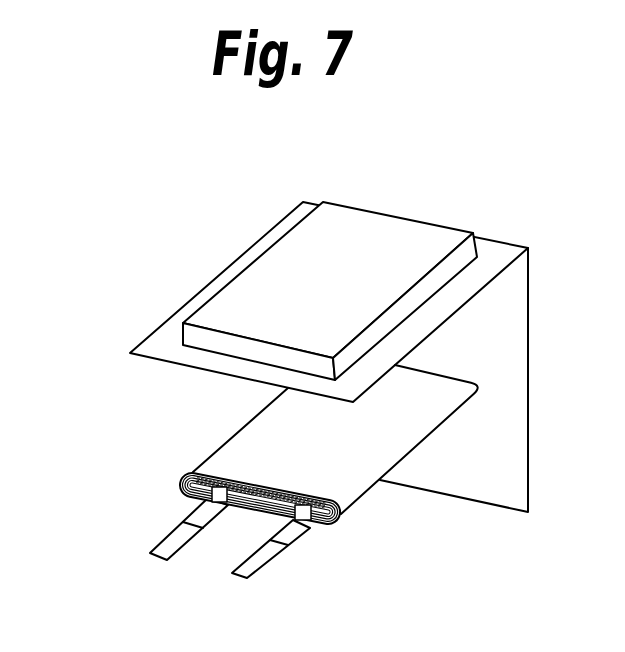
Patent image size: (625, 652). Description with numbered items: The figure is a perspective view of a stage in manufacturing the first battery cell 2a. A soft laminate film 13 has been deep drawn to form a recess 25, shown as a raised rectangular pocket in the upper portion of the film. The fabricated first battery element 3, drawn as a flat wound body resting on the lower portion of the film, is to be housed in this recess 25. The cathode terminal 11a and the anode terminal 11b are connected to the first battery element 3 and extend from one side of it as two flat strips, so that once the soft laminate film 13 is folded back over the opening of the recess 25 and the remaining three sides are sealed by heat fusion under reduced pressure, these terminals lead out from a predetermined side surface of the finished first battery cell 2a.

The first battery cell 2a is at (315, 152).
The soft laminate film 13 is at (206, 285).
The recess 25 is at (301, 238).
The first battery element 3 is at (208, 458).
The cathode terminal 11a is at (230, 576).
The anode terminal 11b is at (148, 555).